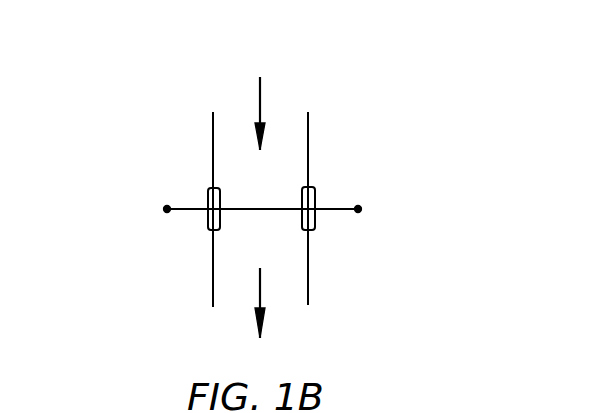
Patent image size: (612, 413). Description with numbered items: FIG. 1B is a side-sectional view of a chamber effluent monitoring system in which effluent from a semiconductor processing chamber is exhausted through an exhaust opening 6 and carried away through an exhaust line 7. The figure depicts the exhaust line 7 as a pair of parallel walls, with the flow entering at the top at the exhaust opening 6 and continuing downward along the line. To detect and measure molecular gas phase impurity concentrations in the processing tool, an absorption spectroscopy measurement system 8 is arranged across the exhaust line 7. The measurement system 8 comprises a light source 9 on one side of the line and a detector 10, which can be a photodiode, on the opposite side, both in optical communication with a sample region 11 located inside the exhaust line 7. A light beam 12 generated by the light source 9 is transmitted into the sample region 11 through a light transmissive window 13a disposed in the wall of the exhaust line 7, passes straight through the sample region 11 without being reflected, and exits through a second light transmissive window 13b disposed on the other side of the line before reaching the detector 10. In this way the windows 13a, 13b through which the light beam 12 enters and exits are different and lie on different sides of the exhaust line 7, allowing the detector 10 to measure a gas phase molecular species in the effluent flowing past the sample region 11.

The exhaust opening 6 is at (280, 117).
The exhaust line 7 is at (308, 133).
The absorption spectroscopy measurement system 8 is at (184, 237).
The light source 9 is at (162, 215).
The detector 10 is at (360, 212).
The sample region 11 is at (258, 198).
The light beam 12 is at (262, 210).
The light transmissive window 13a is at (208, 190).
The light transmissive window 13b is at (313, 192).